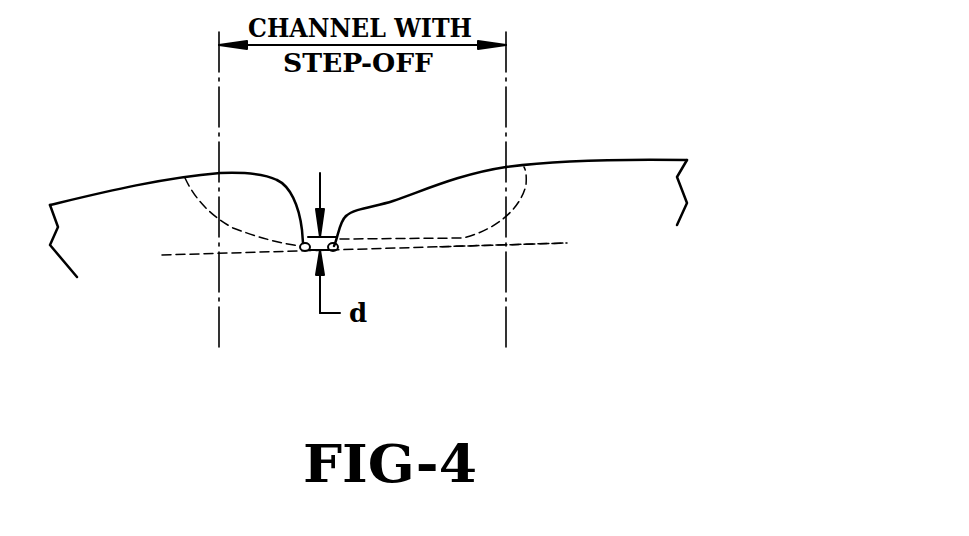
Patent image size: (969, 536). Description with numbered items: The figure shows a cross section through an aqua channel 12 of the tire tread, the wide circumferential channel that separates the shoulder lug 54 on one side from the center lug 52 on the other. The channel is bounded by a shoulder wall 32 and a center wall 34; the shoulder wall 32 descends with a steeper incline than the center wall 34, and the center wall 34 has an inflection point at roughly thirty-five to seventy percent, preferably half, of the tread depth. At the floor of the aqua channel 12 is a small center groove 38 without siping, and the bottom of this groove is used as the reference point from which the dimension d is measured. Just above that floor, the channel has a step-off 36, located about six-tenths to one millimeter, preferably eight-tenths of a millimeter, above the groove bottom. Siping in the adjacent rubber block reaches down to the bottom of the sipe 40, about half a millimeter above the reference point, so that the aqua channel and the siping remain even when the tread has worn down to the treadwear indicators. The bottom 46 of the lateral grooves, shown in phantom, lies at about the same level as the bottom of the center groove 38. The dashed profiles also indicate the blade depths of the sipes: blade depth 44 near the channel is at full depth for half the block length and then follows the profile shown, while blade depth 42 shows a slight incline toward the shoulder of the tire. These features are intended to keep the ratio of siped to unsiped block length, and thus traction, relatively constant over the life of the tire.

The aqua channel 12 is at (291, 346).
The shoulder wall 32 is at (277, 180).
The center wall 34 is at (395, 200).
The step-off 36 is at (339, 237).
The center groove 38 is at (301, 252).
The bottom of the sipe 40 is at (337, 250).
The blade depth 42 is at (198, 202).
The blade depth 44 is at (500, 215).
The bottom of the lateral grooves 46 is at (480, 244).
The center lug 52 is at (592, 160).
The shoulder lug 54 is at (160, 180).